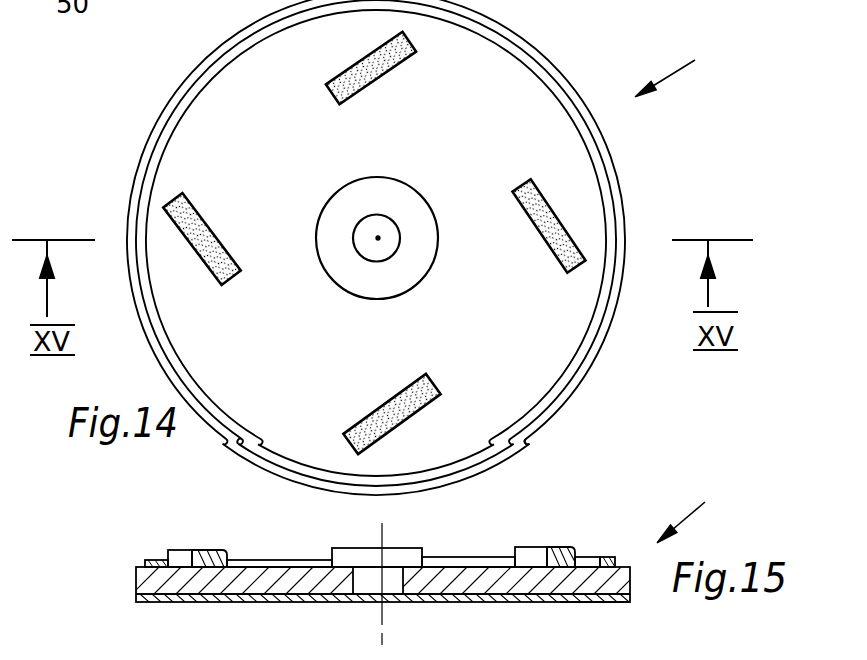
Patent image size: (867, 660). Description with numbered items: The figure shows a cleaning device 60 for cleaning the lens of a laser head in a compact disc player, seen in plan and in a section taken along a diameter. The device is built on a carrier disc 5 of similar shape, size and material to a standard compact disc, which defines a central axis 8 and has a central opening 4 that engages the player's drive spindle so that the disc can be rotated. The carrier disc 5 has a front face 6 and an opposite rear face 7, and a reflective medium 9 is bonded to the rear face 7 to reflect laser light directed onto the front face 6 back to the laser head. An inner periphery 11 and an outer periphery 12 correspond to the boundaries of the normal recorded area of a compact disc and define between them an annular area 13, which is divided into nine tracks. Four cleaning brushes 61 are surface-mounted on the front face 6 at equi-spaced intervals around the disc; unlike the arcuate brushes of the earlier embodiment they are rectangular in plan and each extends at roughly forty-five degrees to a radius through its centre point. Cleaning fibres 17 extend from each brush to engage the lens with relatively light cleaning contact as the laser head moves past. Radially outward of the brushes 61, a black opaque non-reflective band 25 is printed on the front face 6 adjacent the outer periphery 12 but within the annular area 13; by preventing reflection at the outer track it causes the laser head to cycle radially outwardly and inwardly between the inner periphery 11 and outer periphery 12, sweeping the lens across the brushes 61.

In FIG. 14, the opening 4 is at (380, 213).
In FIG. 15, the opening 4 is at (355, 585).
In FIG. 14, the carrier disc 5 is at (578, 313).
In FIG. 15, the carrier disc 5 is at (147, 588).
In FIG. 14, the front face 6 is at (528, 438).
In FIG. 15, the front face 6 is at (253, 567).
In FIG. 15, the rear face 7 is at (220, 597).
In FIG. 14, the central axis 8 is at (378, 238).
In FIG. 15, the central axis 8 is at (378, 523).
In FIG. 15, the reflective medium 9 is at (543, 597).
In FIG. 14, the inner periphery 11 is at (417, 287).
In FIG. 14, the outer periphery 12 is at (557, 70).
In FIG. 14, the annular area 13 is at (238, 392).
In FIG. 14, the cleaning fibres 17 is at (350, 100).
In FIG. 14, the non-reflective band 25 is at (610, 232).
In FIG. 15, the non-reflective band 25 is at (293, 562).
In FIG. 14, the cleaning device 60 is at (683, 77).
In FIG. 15, the cleaning device 60 is at (700, 516).
In FIG. 14, the cleaning brushes 61 is at (382, 70).
In FIG. 15, the cleaning brushes 61 is at (217, 550).